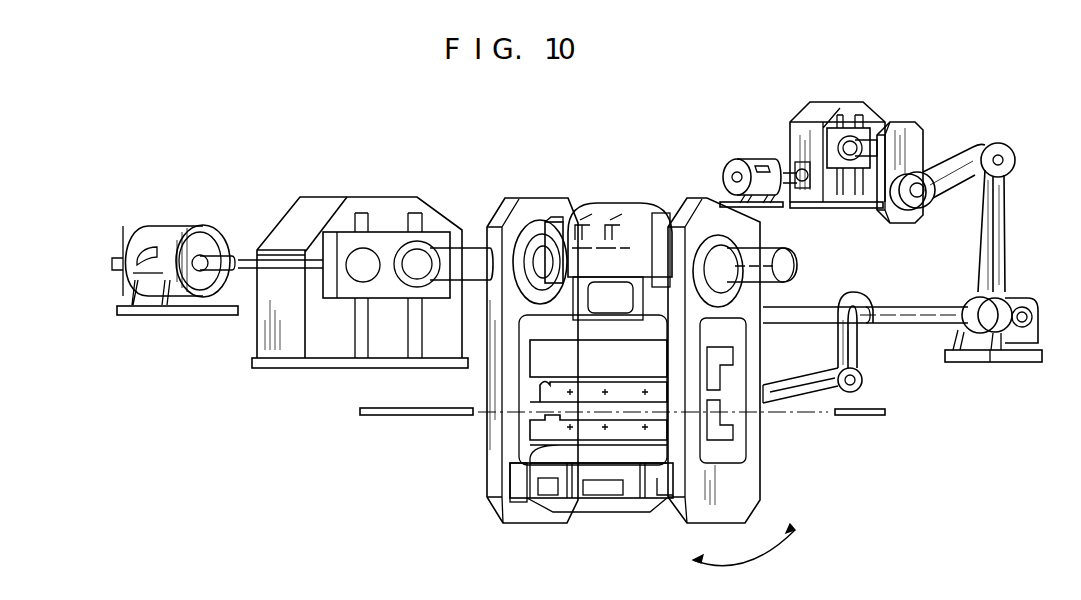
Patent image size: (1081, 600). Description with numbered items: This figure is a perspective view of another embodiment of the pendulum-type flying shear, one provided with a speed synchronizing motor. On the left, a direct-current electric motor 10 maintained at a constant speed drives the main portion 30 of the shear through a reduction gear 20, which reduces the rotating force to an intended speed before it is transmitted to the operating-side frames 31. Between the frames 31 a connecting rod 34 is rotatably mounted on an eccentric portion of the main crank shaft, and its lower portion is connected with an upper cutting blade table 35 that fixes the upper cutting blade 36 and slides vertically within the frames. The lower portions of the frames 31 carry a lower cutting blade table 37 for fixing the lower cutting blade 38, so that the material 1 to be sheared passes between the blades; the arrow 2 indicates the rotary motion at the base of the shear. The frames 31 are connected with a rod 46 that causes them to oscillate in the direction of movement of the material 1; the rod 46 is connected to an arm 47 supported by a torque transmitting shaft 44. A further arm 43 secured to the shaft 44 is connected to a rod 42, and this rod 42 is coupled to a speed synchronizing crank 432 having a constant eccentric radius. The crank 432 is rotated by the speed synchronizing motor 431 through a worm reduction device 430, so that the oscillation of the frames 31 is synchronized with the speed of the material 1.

The direct-current electric motor 10 is at (177, 229).
The reduction gear 20 is at (374, 198).
The main portion 30 is at (618, 151).
The frame 31 is at (538, 200).
The connecting rod 34 is at (618, 210).
The upper cutting blade table 35 is at (593, 390).
The upper cutting blade 36 is at (555, 392).
The lower cutting blade table 37 is at (634, 456).
The lower cutting blade 38 is at (560, 425).
The material 1 is at (423, 409).
The direction of rotation 2 is at (739, 565).
The rod 46 is at (792, 383).
The arm 47 is at (860, 351).
The torque transmitting shaft 44 is at (920, 313).
The further arm 43 is at (1000, 241).
The rod 42 is at (950, 177).
The speed synchronizing motor 431 is at (752, 160).
The worm reduction device 430 is at (903, 77).
The speed synchronizing crank 432 is at (915, 137).